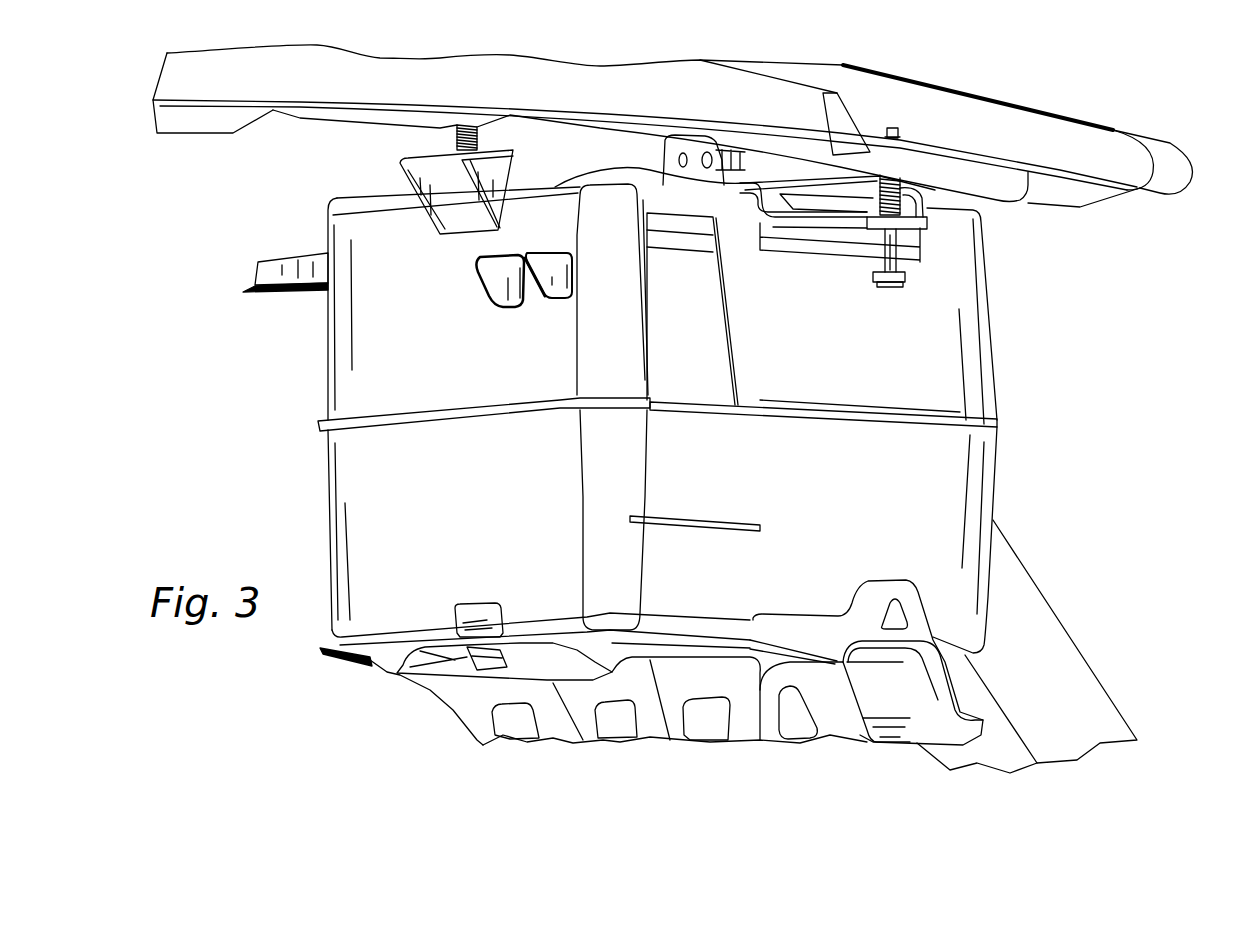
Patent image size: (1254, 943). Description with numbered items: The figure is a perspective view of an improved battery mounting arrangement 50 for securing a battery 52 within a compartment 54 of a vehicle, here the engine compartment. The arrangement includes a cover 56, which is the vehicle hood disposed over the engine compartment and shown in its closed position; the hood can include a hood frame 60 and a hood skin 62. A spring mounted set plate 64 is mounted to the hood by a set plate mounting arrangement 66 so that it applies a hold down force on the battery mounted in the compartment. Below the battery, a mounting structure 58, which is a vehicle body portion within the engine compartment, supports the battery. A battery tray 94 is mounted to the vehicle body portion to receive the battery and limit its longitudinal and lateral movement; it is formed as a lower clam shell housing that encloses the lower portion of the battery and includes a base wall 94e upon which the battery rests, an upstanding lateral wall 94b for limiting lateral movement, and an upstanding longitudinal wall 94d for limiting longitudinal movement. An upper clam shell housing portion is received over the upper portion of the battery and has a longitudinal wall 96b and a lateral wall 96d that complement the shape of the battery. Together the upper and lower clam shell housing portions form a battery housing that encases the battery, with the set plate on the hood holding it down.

The battery mounting arrangement 50 is at (292, 167).
The battery 52 is at (672, 332).
The compartment 54 is at (1126, 294).
The cover 56 is at (1100, 125).
The mounting structure 58 is at (782, 632).
The hood frame 60 is at (826, 140).
The hood skin 62 is at (926, 104).
The spring mounted set plate 64 is at (753, 180).
The set plate mounting arrangement 66 is at (932, 197).
The battery tray 94 is at (920, 483).
The lateral wall 94b is at (850, 507).
The longitudinal wall 94d is at (478, 493).
The base wall 94e is at (623, 640).
The longitudinal wall 96b is at (840, 352).
The lateral wall 96d is at (468, 338).